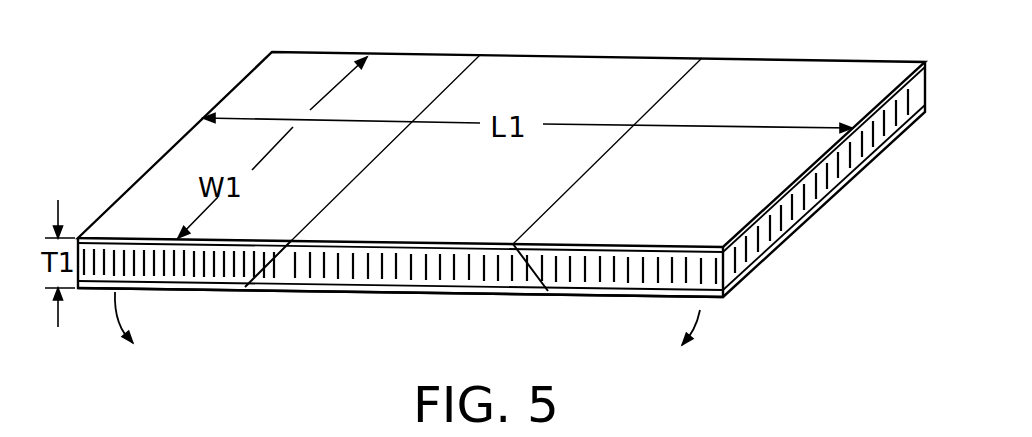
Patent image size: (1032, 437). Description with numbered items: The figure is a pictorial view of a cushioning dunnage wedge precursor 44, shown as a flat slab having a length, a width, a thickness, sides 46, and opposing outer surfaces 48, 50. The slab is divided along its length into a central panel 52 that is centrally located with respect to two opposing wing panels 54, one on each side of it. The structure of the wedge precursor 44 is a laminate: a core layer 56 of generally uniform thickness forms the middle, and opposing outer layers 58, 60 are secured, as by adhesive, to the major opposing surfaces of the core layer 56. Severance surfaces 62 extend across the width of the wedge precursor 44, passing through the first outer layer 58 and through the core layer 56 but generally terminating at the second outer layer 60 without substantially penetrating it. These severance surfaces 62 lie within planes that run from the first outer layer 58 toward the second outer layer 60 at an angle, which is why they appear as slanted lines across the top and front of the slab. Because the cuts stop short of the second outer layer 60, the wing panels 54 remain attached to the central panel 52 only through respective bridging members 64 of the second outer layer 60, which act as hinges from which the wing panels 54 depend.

The wedge precursor 44 is at (718, 50).
The sides 46 is at (647, 280).
The outer surface 48 is at (782, 174).
The outer surface 50 is at (763, 261).
The central panel 52 is at (445, 188).
The wing panels 54 is at (278, 188).
The core layer 56 is at (440, 270).
The first outer layer 58 is at (333, 249).
The second outer layer 60 is at (352, 291).
The severance surfaces 62 is at (261, 271).
The bridging members 64 is at (246, 288).